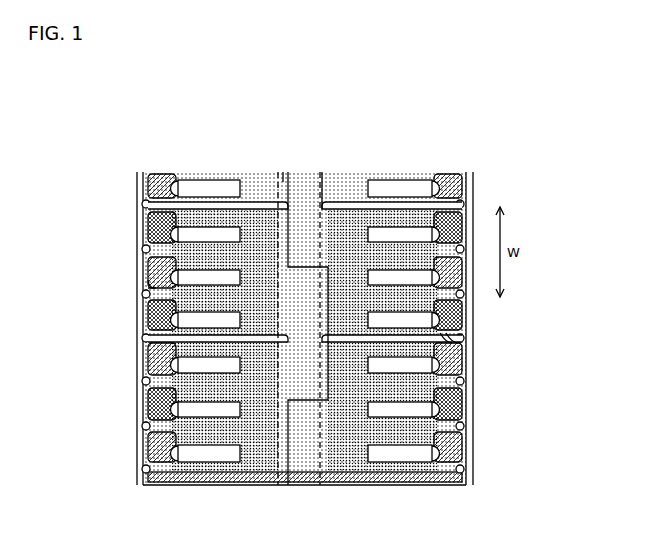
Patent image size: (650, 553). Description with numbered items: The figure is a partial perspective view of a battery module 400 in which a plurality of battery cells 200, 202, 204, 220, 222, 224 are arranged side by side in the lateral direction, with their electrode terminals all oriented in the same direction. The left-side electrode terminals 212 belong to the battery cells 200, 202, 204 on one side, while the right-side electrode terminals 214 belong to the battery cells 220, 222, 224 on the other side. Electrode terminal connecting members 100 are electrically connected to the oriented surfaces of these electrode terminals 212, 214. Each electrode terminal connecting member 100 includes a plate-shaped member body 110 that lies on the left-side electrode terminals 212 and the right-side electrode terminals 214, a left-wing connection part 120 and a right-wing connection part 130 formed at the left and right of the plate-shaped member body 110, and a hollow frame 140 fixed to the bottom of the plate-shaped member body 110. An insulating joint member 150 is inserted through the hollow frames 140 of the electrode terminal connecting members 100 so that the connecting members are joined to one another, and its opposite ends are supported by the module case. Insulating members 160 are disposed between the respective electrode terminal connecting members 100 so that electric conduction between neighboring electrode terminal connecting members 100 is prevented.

The battery module 400 is at (90, 106).
The electrode terminal connecting member 100 is at (450, 383).
The plate-shaped member body 110 is at (298, 388).
The left-wing connection part 120 is at (143, 284).
The right-wing connection part 130 is at (463, 437).
The hollow frame 140 is at (283, 172).
The insulating joint member 150 is at (317, 478).
The insulating member 160 is at (137, 196).
The battery cell 200 is at (148, 213).
The battery cell 202 is at (143, 258).
The battery cell 204 is at (145, 312).
The left-side electrode terminal 212 is at (143, 230).
The right-side electrode terminal 214 is at (463, 367).
The battery cell 220 is at (458, 343).
The battery cell 222 is at (463, 401).
The battery cell 224 is at (463, 468).